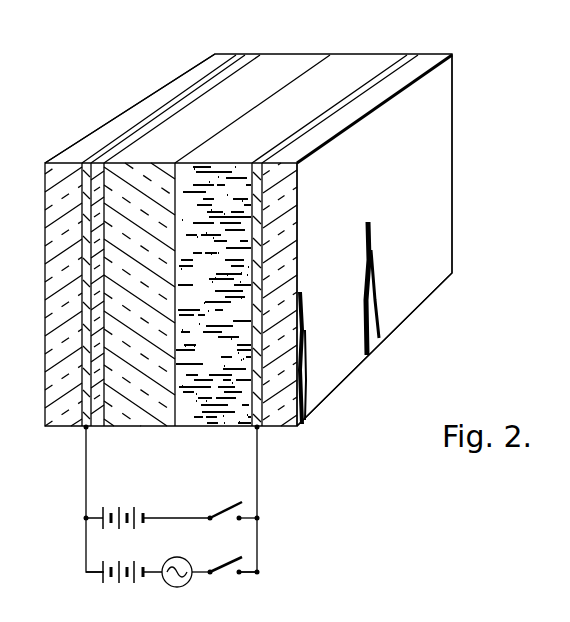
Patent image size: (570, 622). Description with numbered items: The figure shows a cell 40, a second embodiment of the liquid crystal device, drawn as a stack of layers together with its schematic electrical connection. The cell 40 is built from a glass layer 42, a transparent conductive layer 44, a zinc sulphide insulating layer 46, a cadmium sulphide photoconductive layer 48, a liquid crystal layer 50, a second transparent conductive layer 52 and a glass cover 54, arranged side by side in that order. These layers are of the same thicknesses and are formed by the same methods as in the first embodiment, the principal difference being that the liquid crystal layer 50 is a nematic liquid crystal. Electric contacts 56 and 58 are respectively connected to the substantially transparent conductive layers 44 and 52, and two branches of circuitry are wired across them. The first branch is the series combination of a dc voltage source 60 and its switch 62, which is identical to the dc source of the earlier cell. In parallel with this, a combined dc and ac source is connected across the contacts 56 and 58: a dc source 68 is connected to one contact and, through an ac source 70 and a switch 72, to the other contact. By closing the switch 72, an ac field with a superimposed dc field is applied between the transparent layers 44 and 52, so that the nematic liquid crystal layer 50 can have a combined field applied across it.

The cell 40 is at (92, 103).
The glass layer 42 is at (173, 86).
The transparent conductive layer 44 is at (252, 56).
The zinc sulphide insulating layer 46 is at (258, 58).
The cadmium sulphide photoconductive layer 48 is at (320, 61).
The liquid crystal layer 50 is at (381, 56).
The transparent conductive layer 52 is at (410, 57).
The glass cover 54 is at (444, 99).
The electric contact 56 is at (82, 430).
The electric contact 58 is at (260, 429).
The dc voltage source 60 is at (135, 510).
The switch 62 is at (226, 511).
The dc source 68 is at (126, 561).
The ac source 70 is at (172, 558).
The switch 72 is at (226, 564).